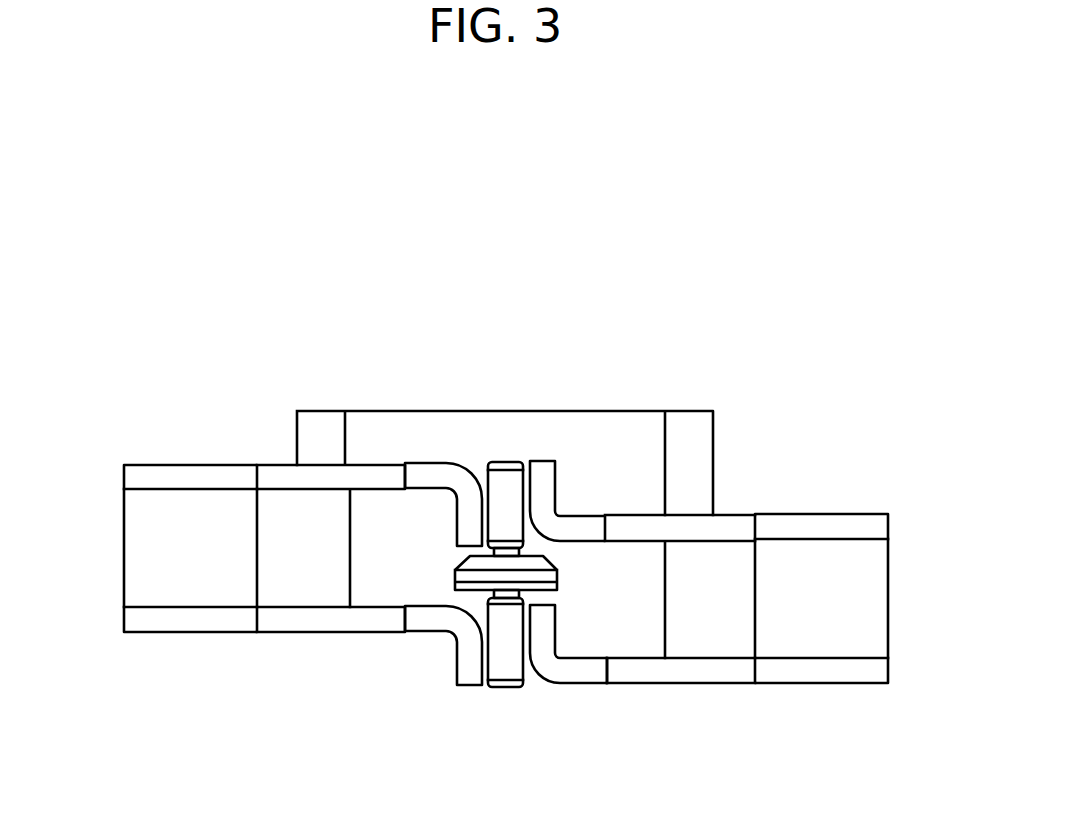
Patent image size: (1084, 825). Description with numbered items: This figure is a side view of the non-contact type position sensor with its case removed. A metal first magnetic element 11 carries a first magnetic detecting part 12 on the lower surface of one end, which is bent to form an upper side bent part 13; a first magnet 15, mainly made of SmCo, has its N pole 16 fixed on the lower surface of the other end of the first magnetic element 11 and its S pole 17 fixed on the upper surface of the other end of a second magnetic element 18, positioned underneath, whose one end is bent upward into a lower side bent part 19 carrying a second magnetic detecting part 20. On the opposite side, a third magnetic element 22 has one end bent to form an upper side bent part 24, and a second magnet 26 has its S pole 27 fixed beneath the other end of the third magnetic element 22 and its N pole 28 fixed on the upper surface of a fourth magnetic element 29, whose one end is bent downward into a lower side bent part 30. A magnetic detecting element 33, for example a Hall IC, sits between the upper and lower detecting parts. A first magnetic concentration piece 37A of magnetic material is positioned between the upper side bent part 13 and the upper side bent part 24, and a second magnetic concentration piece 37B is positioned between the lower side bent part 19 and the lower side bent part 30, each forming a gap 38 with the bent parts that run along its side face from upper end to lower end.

The first magnetic element 11 is at (788, 525).
The first magnetic detecting part 12 is at (542, 528).
The upper side bent part 13 is at (543, 473).
The first magnet 15 is at (850, 598).
The N pole 16 is at (842, 555).
The S pole 17 is at (842, 638).
The second magnetic element 18 is at (808, 670).
The lower side bent part 19 is at (548, 630).
The second magnetic detecting part 20 is at (545, 675).
The third magnetic element 22 is at (232, 470).
The upper side bent part 24 is at (465, 518).
The second magnet 26 is at (175, 550).
The S pole 27 is at (172, 503).
The N pole 28 is at (172, 590).
The fourth magnetic element 29 is at (207, 620).
The lower side bent part 30 is at (462, 673).
The magnetic detecting element 33 is at (465, 578).
The first magnetic concentration piece 37A is at (507, 478).
The second magnetic concentration piece 37B is at (503, 672).
The gap 38 is at (482, 475).